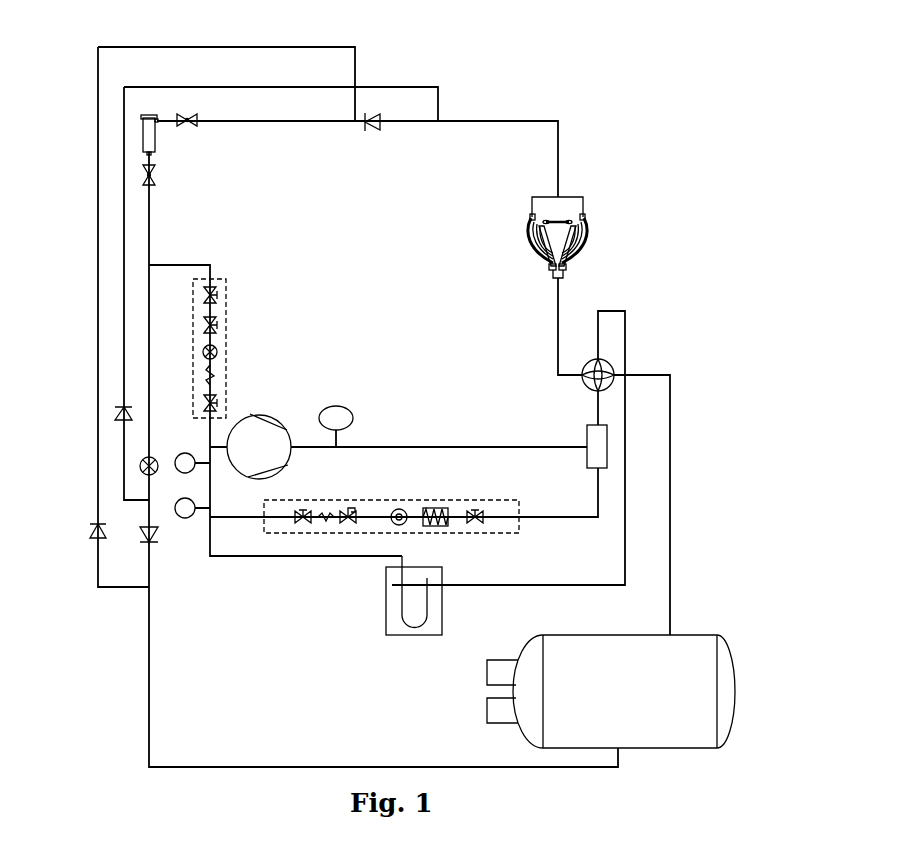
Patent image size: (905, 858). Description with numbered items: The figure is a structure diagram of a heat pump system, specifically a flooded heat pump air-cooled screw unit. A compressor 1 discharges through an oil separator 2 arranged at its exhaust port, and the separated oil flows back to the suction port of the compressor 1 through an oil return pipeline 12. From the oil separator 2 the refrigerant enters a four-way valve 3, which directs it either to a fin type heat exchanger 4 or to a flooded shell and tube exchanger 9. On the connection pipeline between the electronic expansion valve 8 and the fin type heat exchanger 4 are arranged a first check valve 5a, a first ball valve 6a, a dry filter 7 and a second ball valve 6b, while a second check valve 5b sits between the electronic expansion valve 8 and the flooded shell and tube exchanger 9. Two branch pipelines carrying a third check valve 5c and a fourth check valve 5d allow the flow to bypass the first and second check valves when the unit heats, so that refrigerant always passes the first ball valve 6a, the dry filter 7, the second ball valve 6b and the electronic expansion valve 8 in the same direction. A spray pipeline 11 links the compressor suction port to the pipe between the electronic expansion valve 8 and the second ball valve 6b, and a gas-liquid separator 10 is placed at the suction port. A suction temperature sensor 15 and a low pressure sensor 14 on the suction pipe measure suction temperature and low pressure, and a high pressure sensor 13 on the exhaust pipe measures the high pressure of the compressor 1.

The compressor 1 is at (267, 442).
The oil separator 2 is at (597, 453).
The four-way valve 3 is at (600, 373).
The fin type heat exchanger 4 is at (587, 240).
The first check valve 5a is at (375, 116).
The second check valve 5b is at (146, 545).
The third check valve 5c is at (90, 537).
The fourth check valve 5d is at (115, 416).
The first ball valve 6a is at (188, 118).
The second ball valve 6b is at (156, 183).
The dry filter 7 is at (152, 134).
The electronic expansion valve 8 is at (139, 468).
The flooded shell and tube exchanger 9 is at (675, 653).
The gas-liquid separator 10 is at (397, 621).
The spray pipeline 11 is at (223, 328).
The oil return pipeline 12 is at (307, 522).
The high pressure sensor 13 is at (352, 415).
The low pressure sensor 14 is at (180, 457).
The suction temperature sensor 15 is at (186, 521).